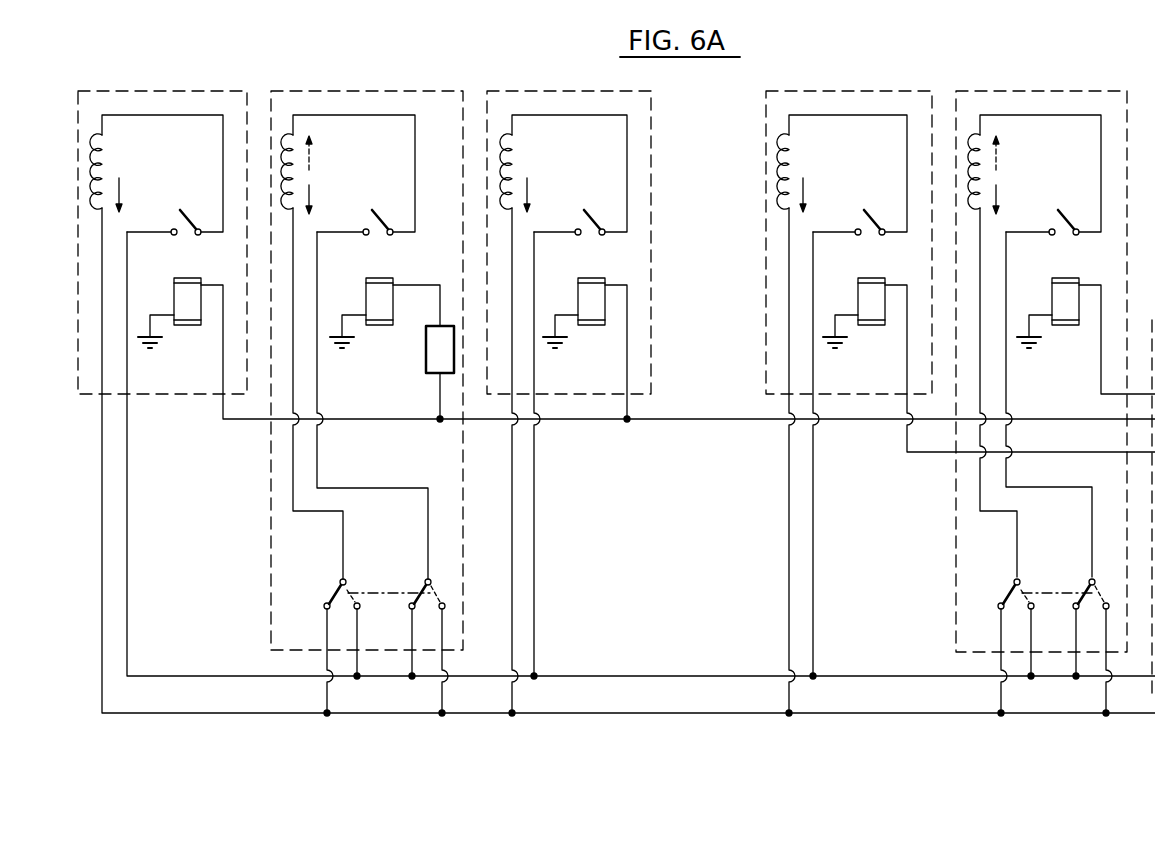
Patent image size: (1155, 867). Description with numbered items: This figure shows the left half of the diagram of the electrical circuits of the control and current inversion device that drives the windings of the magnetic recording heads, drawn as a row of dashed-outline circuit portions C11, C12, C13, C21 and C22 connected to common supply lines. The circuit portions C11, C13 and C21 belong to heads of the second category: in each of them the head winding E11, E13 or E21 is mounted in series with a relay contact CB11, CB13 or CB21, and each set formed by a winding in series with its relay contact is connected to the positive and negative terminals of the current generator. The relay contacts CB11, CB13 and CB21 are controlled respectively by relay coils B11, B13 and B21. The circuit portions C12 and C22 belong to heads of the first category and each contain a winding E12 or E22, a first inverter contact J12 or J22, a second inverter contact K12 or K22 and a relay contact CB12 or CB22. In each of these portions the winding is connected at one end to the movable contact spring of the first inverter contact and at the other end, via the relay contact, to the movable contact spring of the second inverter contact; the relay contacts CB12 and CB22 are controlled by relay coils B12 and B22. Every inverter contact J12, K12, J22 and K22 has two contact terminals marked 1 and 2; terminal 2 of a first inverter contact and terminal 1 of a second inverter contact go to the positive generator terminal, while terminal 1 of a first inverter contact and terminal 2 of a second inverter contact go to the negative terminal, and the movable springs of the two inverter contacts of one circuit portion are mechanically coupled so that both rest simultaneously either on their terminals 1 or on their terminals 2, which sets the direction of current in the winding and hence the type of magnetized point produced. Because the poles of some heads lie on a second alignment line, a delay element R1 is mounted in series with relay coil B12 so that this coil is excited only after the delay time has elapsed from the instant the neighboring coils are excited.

The circuit portion C11 is at (195, 90).
The winding E11 is at (111, 166).
The relay contact CB11 is at (196, 200).
The relay coil B11 is at (187, 326).
The circuit portion C12 is at (417, 90).
The winding E12 is at (302, 166).
The relay contact CB12 is at (388, 200).
The relay coil B12 is at (379, 326).
The delay element R1 is at (427, 368).
The first inverter contact J12 is at (339, 581).
The second inverter contact K12 is at (425, 582).
The contact terminal 1 is at (326, 659).
The contact terminal 2 is at (353, 641).
The circuit portion C13 is at (532, 90).
The winding E13 is at (521, 166).
The relay contact CB13 is at (604, 200).
The relay coil B13 is at (591, 326).
The circuit portion C21 is at (897, 90).
The winding E21 is at (797, 166).
The relay contact CB21 is at (882, 200).
The relay coil B21 is at (871, 326).
The circuit portion C22 is at (1112, 58).
The winding E22 is at (990, 166).
The relay contact CB22 is at (1076, 200).
The relay coil B22 is at (1065, 326).
The first inverter contact J22 is at (1014, 581).
The second inverter contact K22 is at (1089, 582).